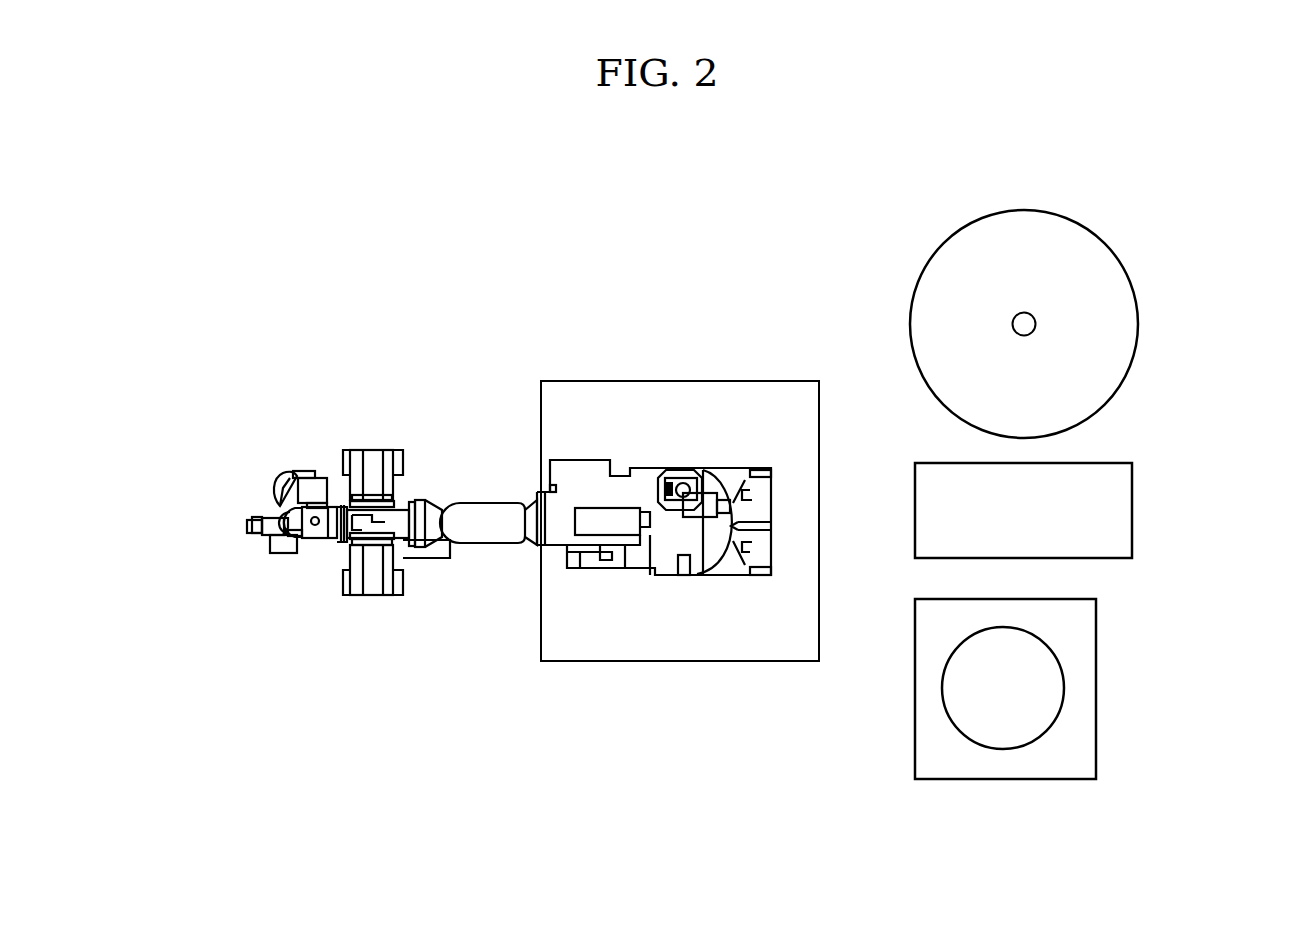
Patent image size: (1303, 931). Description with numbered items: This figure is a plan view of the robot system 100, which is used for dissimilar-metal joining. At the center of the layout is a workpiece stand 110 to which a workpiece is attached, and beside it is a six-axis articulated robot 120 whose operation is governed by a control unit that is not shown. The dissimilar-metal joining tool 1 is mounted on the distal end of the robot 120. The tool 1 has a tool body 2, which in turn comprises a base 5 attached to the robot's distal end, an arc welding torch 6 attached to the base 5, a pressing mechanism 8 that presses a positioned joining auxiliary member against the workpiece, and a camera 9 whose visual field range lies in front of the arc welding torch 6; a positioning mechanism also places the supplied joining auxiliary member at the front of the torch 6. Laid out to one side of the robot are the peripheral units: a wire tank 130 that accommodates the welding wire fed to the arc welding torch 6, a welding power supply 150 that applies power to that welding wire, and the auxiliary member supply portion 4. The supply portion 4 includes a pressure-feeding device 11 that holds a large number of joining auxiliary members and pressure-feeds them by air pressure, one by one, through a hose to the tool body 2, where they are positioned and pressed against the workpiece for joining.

The robot system 100 is at (436, 260).
The dissimilar-metal joining tool 1 is at (200, 425).
The tool body 2 is at (270, 466).
The camera 9 is at (296, 470).
The base 5 is at (323, 530).
The arc welding torch 6 is at (287, 518).
The pressing mechanism 8 is at (230, 535).
The workpiece stand 110 is at (371, 612).
The robot 120 is at (677, 447).
The wire tank 130 is at (1145, 270).
The welding power supply 150 is at (1149, 497).
The auxiliary member supply portion 4 is at (1112, 665).
The pressure-feeding device 11 is at (1007, 781).